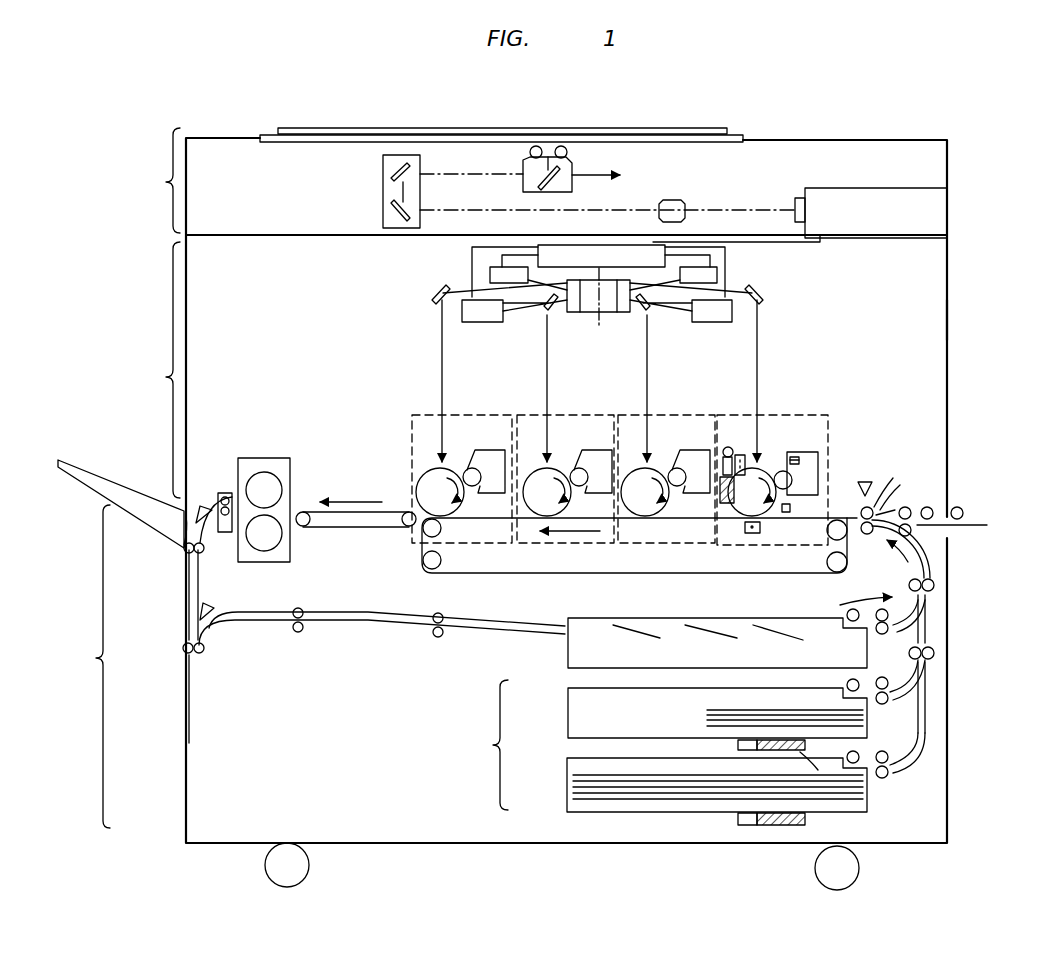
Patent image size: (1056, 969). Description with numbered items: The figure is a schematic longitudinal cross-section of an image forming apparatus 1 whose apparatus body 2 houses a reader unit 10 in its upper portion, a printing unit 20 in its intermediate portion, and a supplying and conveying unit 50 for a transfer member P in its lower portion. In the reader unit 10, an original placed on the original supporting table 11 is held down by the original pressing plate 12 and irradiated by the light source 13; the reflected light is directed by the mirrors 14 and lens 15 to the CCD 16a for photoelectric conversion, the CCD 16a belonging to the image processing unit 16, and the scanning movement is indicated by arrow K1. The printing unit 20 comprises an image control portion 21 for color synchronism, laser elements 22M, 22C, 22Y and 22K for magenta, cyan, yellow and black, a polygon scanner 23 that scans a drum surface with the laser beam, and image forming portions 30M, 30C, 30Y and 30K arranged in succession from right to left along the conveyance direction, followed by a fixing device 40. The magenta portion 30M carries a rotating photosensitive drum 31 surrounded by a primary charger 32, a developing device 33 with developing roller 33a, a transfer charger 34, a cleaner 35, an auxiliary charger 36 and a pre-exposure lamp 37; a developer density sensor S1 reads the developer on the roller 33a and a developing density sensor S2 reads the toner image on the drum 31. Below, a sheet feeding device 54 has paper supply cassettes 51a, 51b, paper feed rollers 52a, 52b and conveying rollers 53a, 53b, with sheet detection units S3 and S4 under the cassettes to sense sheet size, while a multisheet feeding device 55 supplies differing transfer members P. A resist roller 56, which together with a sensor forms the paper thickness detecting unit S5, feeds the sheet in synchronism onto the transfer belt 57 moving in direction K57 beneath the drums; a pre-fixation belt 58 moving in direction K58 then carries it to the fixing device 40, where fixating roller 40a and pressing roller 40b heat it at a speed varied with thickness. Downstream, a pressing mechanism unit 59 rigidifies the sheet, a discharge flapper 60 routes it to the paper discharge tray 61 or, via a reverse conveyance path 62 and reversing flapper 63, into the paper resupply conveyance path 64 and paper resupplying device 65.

The image forming apparatus 1 is at (494, 132).
The apparatus body 2 is at (962, 304).
The reader unit 10 is at (154, 180).
The original supporting table 11 is at (732, 140).
The original pressing plate 12 is at (700, 136).
The light source 13 is at (562, 146).
The mirrors 14 is at (392, 174).
The lens 15 is at (684, 199).
The image processing unit 16 is at (910, 198).
The CCD 16a is at (800, 198).
The printing unit 20 is at (154, 370).
The image control portion 21 is at (598, 245).
The laser element for black 22K is at (486, 274).
The laser element for yellow 22Y is at (462, 314).
The laser element for cyan 22C is at (732, 314).
The laser element for magenta 22M is at (724, 274).
The polygon scanner 23 is at (610, 314).
The image forming portion for black 30K is at (488, 414).
The image forming portion for yellow 30Y is at (586, 414).
The image forming portion for cyan 30C is at (666, 414).
The image forming portion for magenta 30M is at (770, 414).
The photosensitive drum 31 is at (760, 470).
The primary charger 32 is at (740, 454).
The developing device 33 is at (822, 464).
The developing roller 33a is at (784, 470).
The transfer charger 34 is at (752, 534).
The cleaner 35 is at (722, 504).
The auxiliary charger 36 is at (723, 450).
The pre-exposure lamp 37 is at (725, 456).
The fixing device 40 is at (290, 468).
The fixating roller 40a is at (266, 472).
The pressing roller 40b is at (278, 535).
The supplying and conveying unit 50 is at (86, 666).
The paper supply cassette 51a is at (568, 692).
The paper supply cassette 51b is at (568, 762).
The paper feed roller 52a is at (870, 698).
The paper feed roller 52b is at (860, 762).
The conveying roller 53a is at (889, 690).
The conveying roller 53b is at (889, 766).
The sheet feeding device 54 is at (483, 745).
The multisheet feeding device 55 is at (975, 520).
The resist roller 56 is at (873, 538).
The transfer belt 57 is at (480, 577).
The pre-fixation belt 58 is at (372, 530).
The pressing mechanism unit 59 is at (222, 493).
The discharge flapper 60 is at (184, 542).
The paper discharge tray 61 is at (104, 478).
The reverse conveyance path 62 is at (189, 586).
The reversing flapper 63 is at (212, 606).
The paper resupply conveyance path 64 is at (374, 628).
The paper resupplying device 65 is at (568, 648).
The scanning direction K1 is at (615, 176).
The direction of movement of transfer belt K57 is at (586, 533).
The direction of movement of pre-fixation belt K58 is at (362, 502).
The transfer member P is at (706, 715).
The developer density sensor S1 is at (799, 460).
The developing density sensor S2 is at (789, 512).
The sheet detection unit S3 is at (800, 752).
The sheet detection unit S4 is at (795, 826).
The paper thickness detecting unit S5 is at (872, 476).